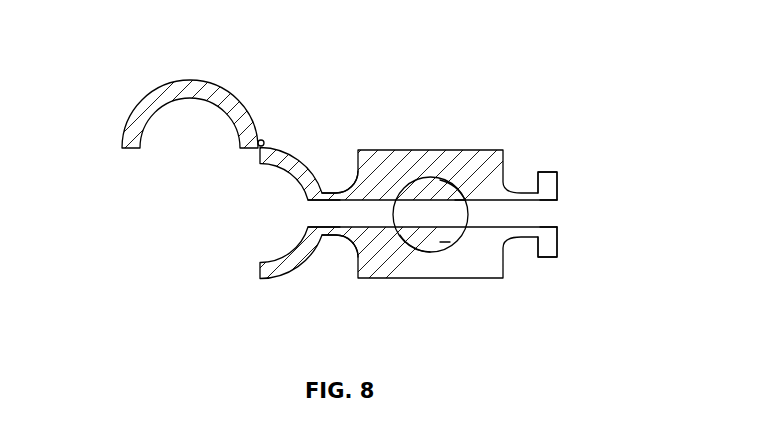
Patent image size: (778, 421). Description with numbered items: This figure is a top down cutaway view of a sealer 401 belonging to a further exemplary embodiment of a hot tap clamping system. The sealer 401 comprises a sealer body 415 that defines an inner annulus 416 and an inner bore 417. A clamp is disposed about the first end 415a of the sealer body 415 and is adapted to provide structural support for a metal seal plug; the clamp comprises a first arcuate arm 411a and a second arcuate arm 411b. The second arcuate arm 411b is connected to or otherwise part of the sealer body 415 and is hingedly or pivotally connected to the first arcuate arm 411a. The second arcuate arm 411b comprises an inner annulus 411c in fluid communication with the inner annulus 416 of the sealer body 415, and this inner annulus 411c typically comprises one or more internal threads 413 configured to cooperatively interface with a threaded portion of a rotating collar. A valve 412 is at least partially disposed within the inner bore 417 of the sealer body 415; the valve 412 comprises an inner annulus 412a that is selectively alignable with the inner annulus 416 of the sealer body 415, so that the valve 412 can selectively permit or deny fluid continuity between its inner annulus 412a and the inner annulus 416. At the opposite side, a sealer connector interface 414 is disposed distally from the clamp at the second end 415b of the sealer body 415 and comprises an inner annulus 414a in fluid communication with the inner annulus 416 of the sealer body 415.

The sealer 401 is at (234, 37).
The first arcuate arm 411a is at (132, 118).
The second arcuate arm 411b is at (273, 157).
The inner annulus 411c is at (303, 217).
The valve 412 is at (430, 178).
The inner annulus 412a is at (450, 196).
The internal threads 413 is at (330, 210).
The sealer connector interface 414 is at (548, 172).
The inner annulus 414a is at (550, 216).
The sealer body 415 is at (372, 279).
The first end 415a is at (333, 235).
The second end 415b is at (520, 237).
The inner annulus 416 is at (422, 251).
The inner bore 417 is at (455, 206).